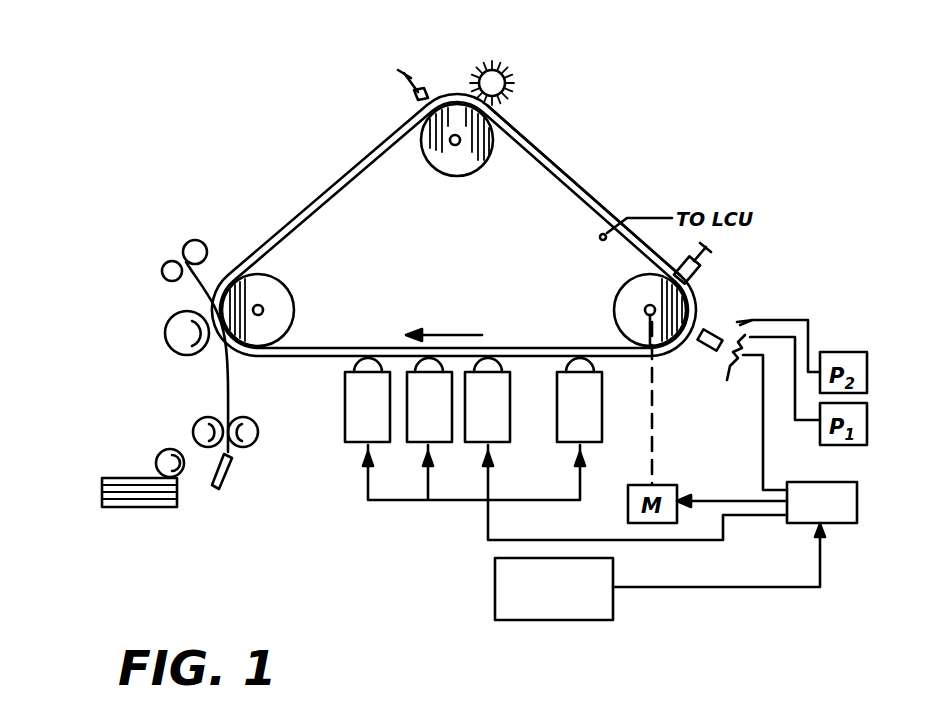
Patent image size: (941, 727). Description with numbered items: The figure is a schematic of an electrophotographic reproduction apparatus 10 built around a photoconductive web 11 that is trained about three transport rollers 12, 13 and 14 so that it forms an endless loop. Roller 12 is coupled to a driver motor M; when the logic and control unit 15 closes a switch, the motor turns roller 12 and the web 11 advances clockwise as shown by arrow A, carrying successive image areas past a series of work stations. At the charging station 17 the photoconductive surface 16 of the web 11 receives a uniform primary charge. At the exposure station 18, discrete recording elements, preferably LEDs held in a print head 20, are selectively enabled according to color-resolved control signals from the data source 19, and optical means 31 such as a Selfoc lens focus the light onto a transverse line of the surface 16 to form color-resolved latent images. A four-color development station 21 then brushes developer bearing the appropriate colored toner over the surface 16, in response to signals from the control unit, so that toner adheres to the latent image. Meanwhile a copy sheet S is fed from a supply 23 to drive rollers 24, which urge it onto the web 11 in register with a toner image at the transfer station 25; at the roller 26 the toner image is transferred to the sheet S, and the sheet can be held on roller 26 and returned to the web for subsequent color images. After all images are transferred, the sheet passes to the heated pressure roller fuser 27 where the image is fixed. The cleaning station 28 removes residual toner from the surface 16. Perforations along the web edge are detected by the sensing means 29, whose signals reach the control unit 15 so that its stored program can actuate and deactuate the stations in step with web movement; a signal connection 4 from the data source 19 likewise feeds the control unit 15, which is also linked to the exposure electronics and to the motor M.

The electrophotographic reproduction apparatus 10 is at (316, 103).
The photoconductive web 11 is at (272, 237).
The transport roller 12 is at (622, 298).
The transport roller 13 is at (435, 158).
The transport roller 14 is at (293, 313).
The logic and control unit 15 is at (858, 505).
The photoconductive surface 16 is at (553, 158).
The charging station 17 is at (713, 278).
The exposure station 18 is at (752, 320).
The data source 19 is at (548, 623).
The print head 20 is at (766, 405).
The four-color development station 21 is at (462, 502).
The supply 23 is at (140, 508).
The drive rollers 24 is at (193, 432).
The transfer station 25 is at (128, 397).
The roller 26 is at (165, 334).
The heated pressure roller fuser 27 is at (166, 269).
The cleaning station 28 is at (509, 77).
The means for sensing web perforations 29 is at (601, 240).
The optical means 31 is at (705, 352).
The signal line 4 is at (548, 540).
The copy sheet S is at (190, 283).
The arrow A is at (444, 322).